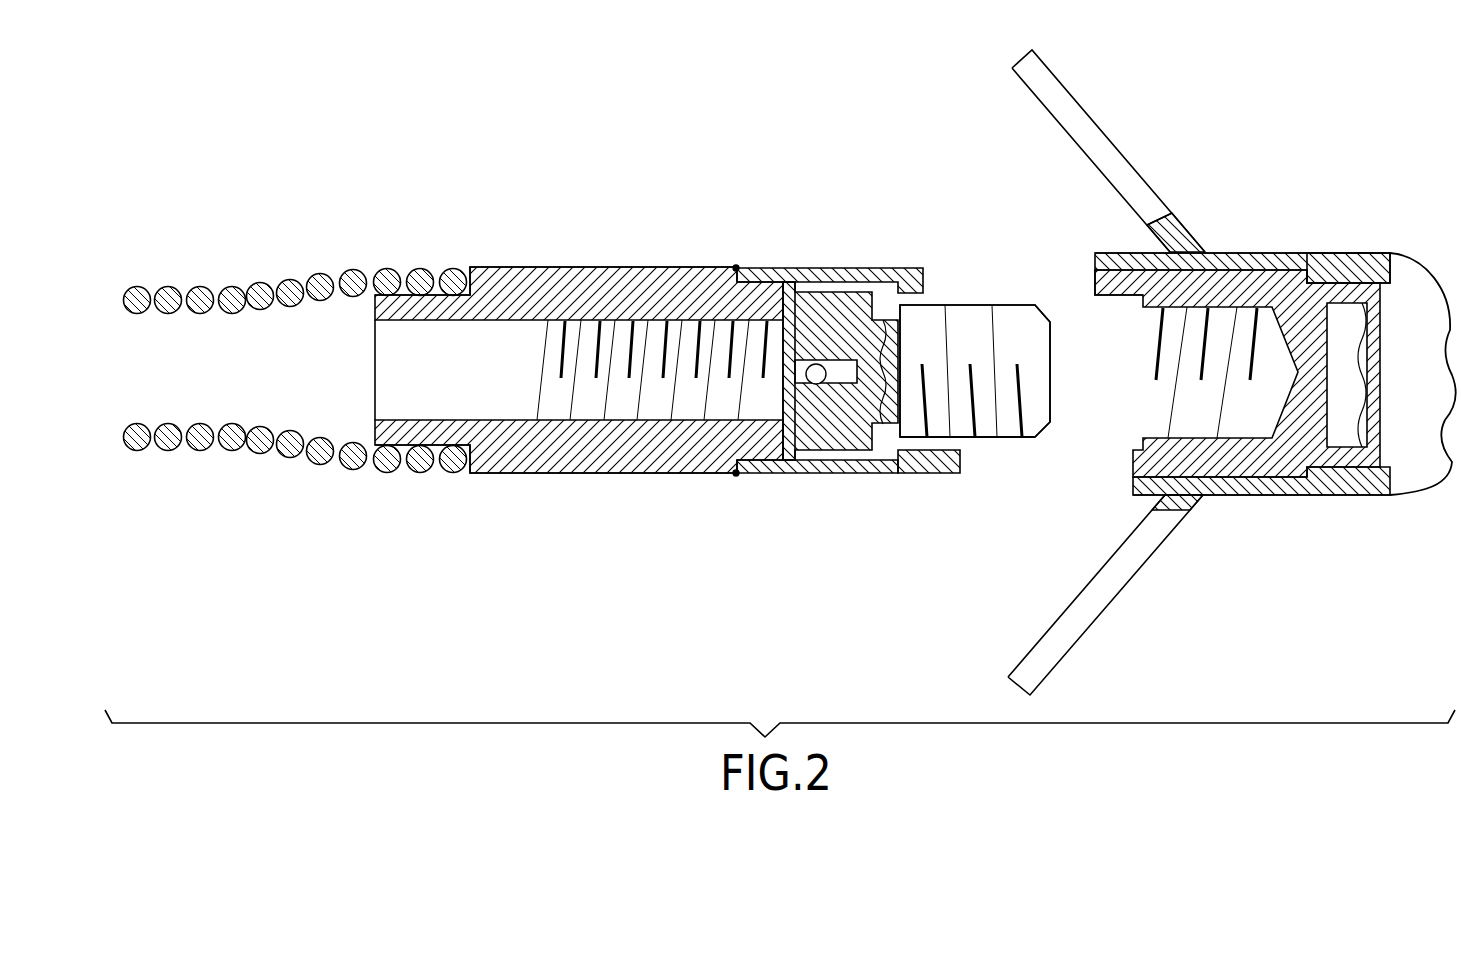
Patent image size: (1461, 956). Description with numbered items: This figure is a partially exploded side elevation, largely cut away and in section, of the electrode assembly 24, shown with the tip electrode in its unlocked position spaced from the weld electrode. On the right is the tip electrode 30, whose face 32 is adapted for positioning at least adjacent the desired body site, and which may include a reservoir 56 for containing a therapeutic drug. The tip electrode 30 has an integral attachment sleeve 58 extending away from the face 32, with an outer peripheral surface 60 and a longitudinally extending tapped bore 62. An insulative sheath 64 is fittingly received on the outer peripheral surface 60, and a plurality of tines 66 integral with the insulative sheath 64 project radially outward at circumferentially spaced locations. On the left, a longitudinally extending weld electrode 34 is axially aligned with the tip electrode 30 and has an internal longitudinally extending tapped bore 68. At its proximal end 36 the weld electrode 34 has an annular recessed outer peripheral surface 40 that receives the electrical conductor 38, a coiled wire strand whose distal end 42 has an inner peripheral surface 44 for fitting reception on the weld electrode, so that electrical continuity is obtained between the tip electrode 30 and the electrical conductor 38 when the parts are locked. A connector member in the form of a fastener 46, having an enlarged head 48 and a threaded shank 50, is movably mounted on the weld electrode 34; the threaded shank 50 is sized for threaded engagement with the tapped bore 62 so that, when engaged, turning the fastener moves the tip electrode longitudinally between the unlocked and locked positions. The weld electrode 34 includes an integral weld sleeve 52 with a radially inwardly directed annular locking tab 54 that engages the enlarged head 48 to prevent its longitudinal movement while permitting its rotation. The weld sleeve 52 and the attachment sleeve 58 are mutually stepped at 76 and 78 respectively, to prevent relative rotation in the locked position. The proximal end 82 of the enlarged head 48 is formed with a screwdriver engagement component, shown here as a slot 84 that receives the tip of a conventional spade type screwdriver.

The electrode assembly 24 is at (781, 135).
The tip electrode 30 is at (1296, 194).
The face 32 is at (1423, 285).
The weld electrode 34 is at (615, 218).
The proximal end 36 is at (375, 370).
The electrical conductor 38 is at (280, 262).
The annular recessed outer peripheral surface 40 is at (419, 278).
The distal end 42 is at (490, 267).
The inner peripheral surface 44 is at (383, 470).
The fastener 46 is at (947, 274).
The enlarged head 48 is at (828, 322).
The threaded shank 50 is at (1012, 430).
The weld sleeve 52 is at (845, 465).
The annular locking tab 54 is at (930, 469).
The reservoir 56 is at (1347, 430).
The attachment sleeve 58 is at (1275, 280).
The outer peripheral surface 60 is at (1272, 480).
The tapped bore 62 is at (1197, 411).
The insulative sheath 64 is at (1350, 268).
The tines 66 is at (1068, 111).
The tapped bore 68 is at (630, 395).
The step 76 is at (943, 443).
The step 78 is at (1095, 300).
The proximal end 82 is at (790, 340).
The slot 84 is at (815, 385).